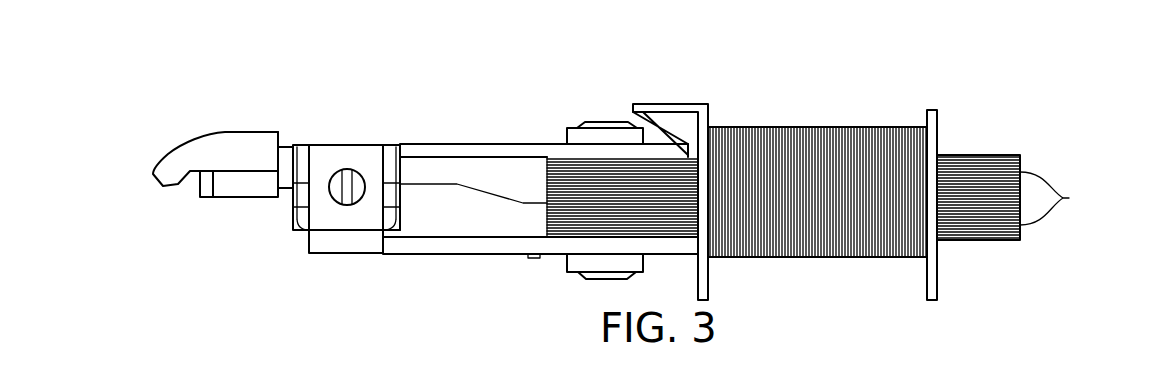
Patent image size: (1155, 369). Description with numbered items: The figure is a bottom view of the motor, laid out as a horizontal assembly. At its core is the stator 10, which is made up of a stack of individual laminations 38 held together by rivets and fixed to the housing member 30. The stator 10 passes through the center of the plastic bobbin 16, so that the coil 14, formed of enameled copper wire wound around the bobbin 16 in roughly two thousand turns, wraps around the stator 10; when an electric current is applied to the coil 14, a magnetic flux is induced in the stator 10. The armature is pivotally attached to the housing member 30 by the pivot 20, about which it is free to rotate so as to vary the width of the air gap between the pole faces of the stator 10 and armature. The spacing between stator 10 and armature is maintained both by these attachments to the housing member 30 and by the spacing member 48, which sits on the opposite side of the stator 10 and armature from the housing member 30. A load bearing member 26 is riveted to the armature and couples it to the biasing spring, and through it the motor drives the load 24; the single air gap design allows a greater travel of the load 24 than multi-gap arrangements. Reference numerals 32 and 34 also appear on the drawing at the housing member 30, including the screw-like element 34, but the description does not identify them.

The stator 10 is at (988, 162).
The coil 14 is at (837, 243).
The plastic bobbin 16 is at (932, 302).
The pivot 20 is at (598, 120).
The load 24 is at (218, 143).
The load bearing member 26 is at (493, 165).
The housing member 30 is at (473, 243).
The block wall 32 is at (393, 162).
The screw 34 is at (358, 205).
The laminations 38 is at (1064, 198).
The spacing member 48 is at (577, 153).